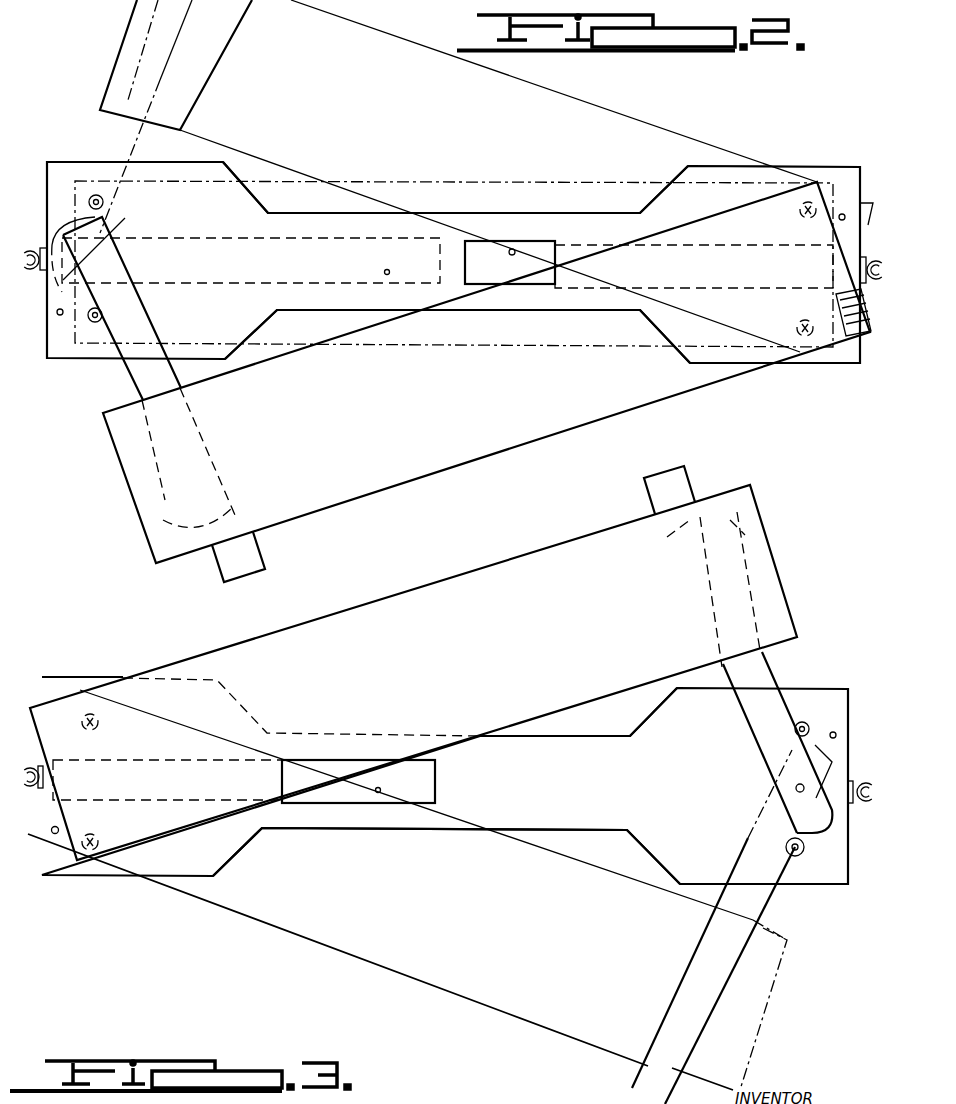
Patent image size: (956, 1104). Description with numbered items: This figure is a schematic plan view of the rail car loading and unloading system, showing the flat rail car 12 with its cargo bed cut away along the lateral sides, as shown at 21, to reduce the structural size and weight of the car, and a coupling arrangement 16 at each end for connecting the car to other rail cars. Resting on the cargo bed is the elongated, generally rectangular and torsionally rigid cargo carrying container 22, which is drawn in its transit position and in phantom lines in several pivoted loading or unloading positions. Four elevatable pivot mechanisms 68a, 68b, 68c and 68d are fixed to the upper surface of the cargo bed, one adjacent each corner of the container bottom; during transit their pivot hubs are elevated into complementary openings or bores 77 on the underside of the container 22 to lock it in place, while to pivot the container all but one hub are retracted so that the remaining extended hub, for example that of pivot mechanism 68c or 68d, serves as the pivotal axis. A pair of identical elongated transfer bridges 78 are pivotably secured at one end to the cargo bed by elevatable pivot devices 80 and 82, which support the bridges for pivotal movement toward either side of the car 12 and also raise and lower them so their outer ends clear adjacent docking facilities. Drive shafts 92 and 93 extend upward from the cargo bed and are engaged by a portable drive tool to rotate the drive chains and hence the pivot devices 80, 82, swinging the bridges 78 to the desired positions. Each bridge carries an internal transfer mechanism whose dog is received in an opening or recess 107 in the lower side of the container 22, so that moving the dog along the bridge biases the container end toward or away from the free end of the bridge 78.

In FIG. 2, the rail car 12 is at (45, 190).
In FIG. 3, the rail car 12 is at (63, 677).
In FIG. 2, the coupling arrangement 16 is at (36, 248).
In FIG. 3, the coupling arrangement 16 is at (32, 794).
In FIG. 2, the cut away portion of the cargo bed 21 is at (323, 213).
In FIG. 3, the cut away portion of the cargo bed 21 is at (572, 736).
In FIG. 2, the cargo carrying container 22 is at (124, 482).
In FIG. 3, the cargo carrying container 22 is at (445, 578).
In FIG. 2, the elevatable pivot mechanism 68a is at (96, 196).
In FIG. 3, the elevatable pivot mechanism 68a is at (95, 714).
In FIG. 2, the elevatable pivot mechanism 68b is at (92, 322).
In FIG. 3, the elevatable pivot mechanism 68b is at (97, 873).
In FIG. 2, the elevatable pivot mechanism 68c is at (808, 198).
In FIG. 3, the elevatable pivot mechanism 68c is at (806, 725).
In FIG. 2, the elevatable pivot mechanism 68d is at (805, 340).
In FIG. 3, the elevatable pivot mechanism 68d is at (800, 856).
In FIG. 2, the openings or bores 77 is at (149, 253).
In FIG. 3, the openings or bores 77 is at (775, 530).
In FIG. 2, the transfer bridge 78 is at (205, 82).
In FIG. 3, the transfer bridge 78 is at (688, 471).
In FIG. 2, the elevatable pivot device 80 is at (95, 266).
In FIG. 3, the elevatable pivot device 80 is at (88, 786).
In FIG. 2, the elevatable pivot device 82 is at (812, 258).
In FIG. 3, the elevatable pivot device 82 is at (796, 788).
In FIG. 2, the drive shaft 92 is at (57, 313).
In FIG. 3, the drive shaft 92 is at (55, 835).
In FIG. 2, the drive shaft 93 is at (843, 214).
In FIG. 3, the drive shaft 93 is at (834, 732).
In FIG. 2, the opening or recess 107 is at (245, 0).
In FIG. 3, the opening or recess 107 is at (665, 540).